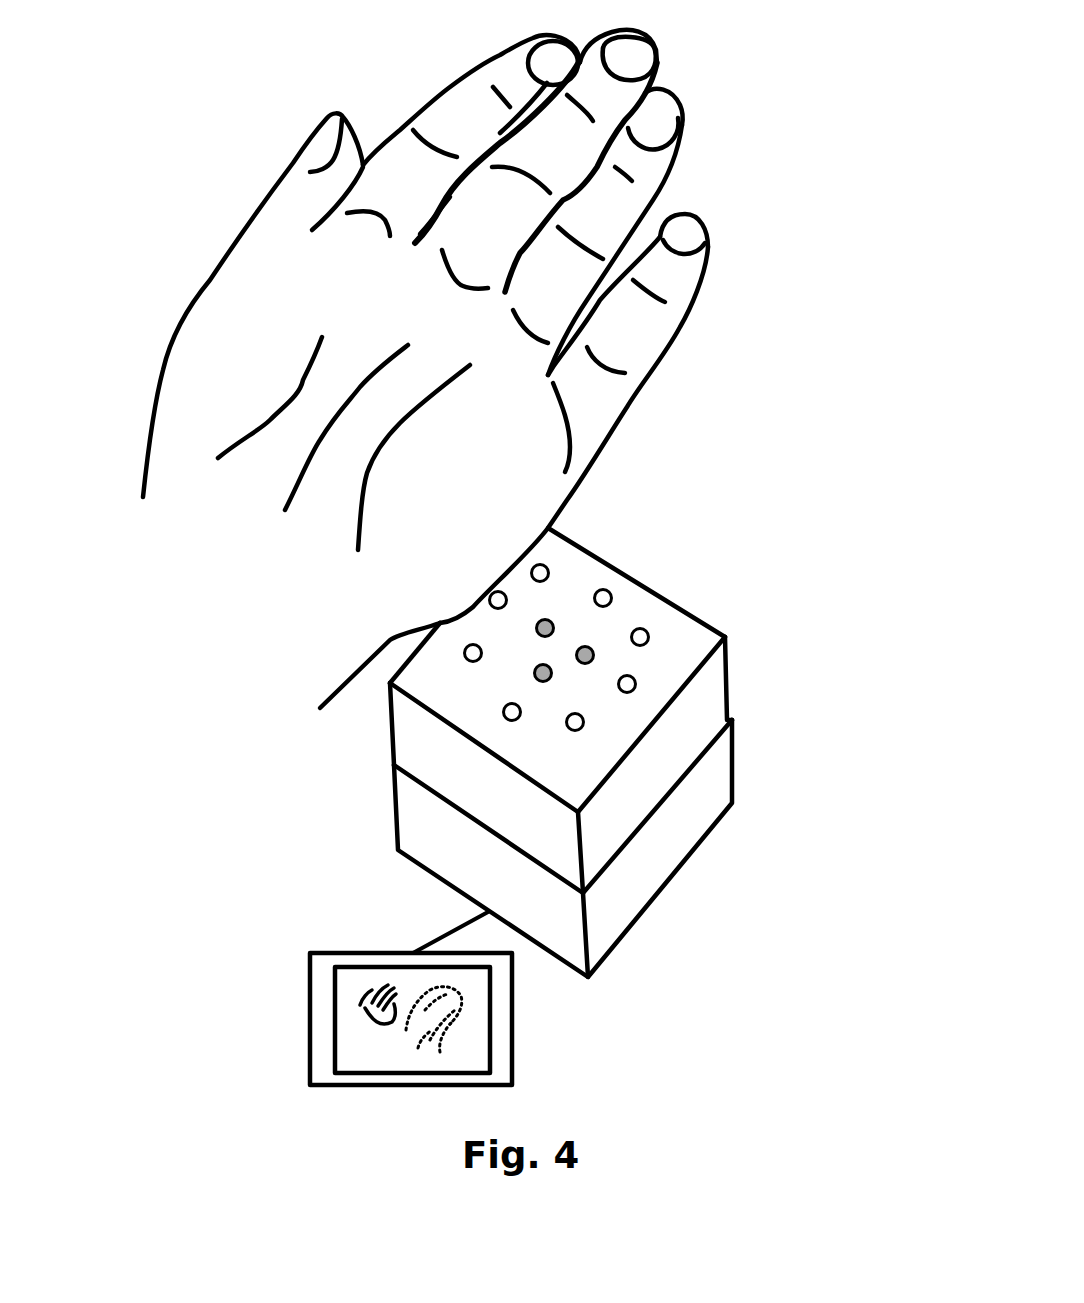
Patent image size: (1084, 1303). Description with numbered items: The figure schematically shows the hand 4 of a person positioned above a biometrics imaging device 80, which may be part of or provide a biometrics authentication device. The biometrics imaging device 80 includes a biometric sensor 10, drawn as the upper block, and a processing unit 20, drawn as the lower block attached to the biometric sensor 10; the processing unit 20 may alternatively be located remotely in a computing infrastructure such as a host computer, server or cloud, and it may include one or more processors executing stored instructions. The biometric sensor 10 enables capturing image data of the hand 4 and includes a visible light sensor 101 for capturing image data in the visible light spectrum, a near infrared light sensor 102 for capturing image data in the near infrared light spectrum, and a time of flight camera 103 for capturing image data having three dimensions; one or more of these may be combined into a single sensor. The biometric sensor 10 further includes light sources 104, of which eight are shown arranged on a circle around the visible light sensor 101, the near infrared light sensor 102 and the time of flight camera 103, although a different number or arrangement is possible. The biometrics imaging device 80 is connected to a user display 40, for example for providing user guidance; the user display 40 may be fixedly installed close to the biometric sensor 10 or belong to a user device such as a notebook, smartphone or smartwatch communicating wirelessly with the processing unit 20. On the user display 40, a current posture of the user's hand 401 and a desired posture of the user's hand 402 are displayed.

The hand 4 is at (132, 336).
The biometric sensor 10 is at (501, 803).
The processing unit 20 is at (501, 886).
The user display 40 is at (283, 1086).
The biometrics imaging device 80 is at (864, 872).
The visible light sensor 101 is at (552, 620).
The near infrared light sensor 102 is at (596, 658).
The time of flight camera 103 is at (528, 678).
The light sources 104 is at (480, 648).
The current posture of the user's hand 401 is at (360, 1005).
The desired posture of the user's hand 402 is at (438, 1033).